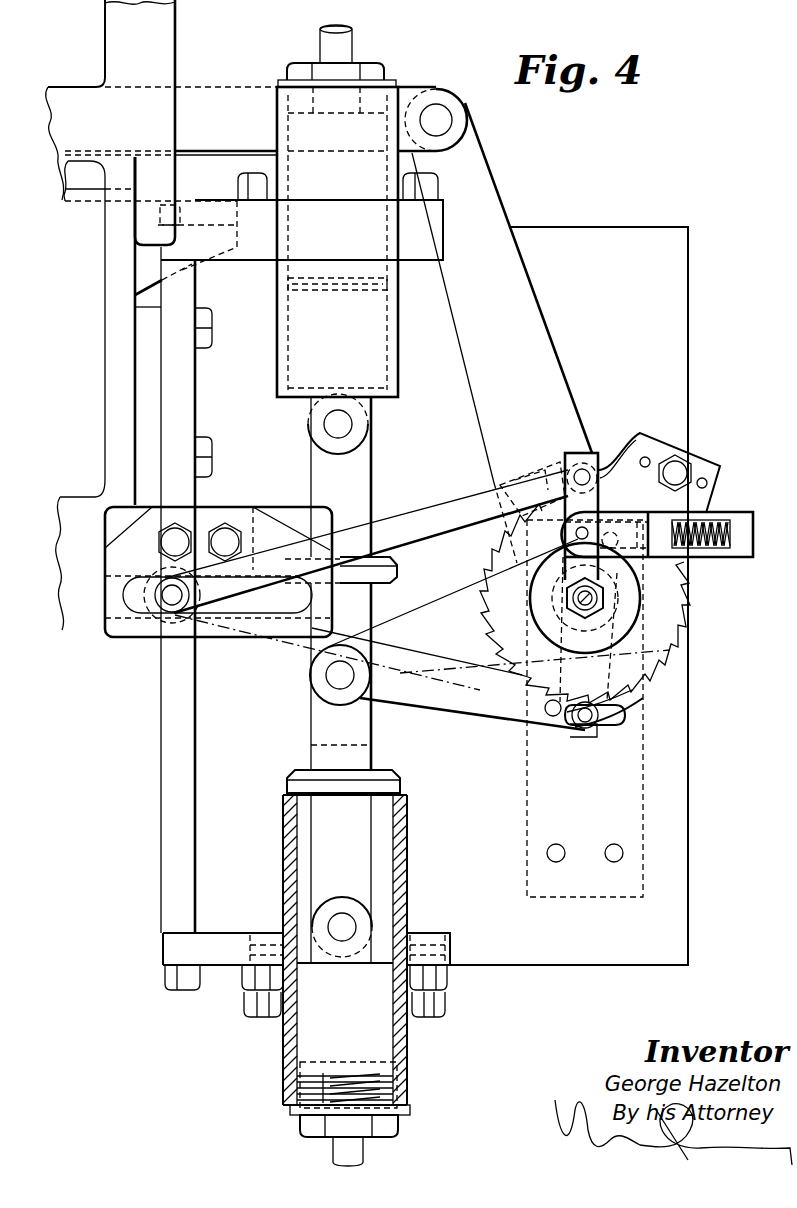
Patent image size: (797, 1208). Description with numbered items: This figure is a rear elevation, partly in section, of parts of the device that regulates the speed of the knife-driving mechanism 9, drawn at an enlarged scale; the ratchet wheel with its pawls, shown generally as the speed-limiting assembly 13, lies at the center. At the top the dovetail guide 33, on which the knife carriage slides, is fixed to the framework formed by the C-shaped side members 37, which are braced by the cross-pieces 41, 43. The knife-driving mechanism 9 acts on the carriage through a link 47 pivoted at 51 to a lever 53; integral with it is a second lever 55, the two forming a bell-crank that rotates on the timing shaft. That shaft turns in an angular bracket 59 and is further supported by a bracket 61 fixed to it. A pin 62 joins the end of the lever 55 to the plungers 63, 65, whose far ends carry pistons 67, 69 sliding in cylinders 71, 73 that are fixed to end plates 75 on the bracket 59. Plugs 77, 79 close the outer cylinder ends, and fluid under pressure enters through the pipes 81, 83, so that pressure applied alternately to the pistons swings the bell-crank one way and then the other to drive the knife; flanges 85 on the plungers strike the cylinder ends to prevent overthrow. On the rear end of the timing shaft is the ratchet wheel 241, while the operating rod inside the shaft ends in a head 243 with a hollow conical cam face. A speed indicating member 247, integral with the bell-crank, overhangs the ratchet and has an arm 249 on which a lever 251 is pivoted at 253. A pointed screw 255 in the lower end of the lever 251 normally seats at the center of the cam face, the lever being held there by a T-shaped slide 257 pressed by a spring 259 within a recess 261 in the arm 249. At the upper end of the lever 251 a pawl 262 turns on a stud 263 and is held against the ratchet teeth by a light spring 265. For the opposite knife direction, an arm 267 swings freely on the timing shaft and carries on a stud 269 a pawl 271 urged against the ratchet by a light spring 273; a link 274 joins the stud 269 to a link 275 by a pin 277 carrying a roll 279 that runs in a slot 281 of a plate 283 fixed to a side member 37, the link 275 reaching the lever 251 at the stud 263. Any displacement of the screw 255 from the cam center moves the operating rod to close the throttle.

The knife-driving mechanism 9 is at (562, 309).
The ratchet wheel 13 is at (681, 686).
The dovetail guide 33 is at (72, 175).
The C-shaped side member 37 is at (113, 430).
The cross-piece 41 is at (103, 607).
The cross-piece 43 is at (80, 92).
The link 47 is at (230, 97).
The pivot 51 is at (441, 114).
The lever 53 is at (555, 372).
The lever 55 is at (402, 687).
The angular bracket 59 is at (193, 815).
The bracket 61 is at (643, 882).
The pin 62 is at (330, 680).
The plunger 63 is at (364, 478).
The plunger 65 is at (318, 727).
The piston 67 is at (368, 293).
The piston 69 is at (377, 1070).
The cylinder 71 is at (286, 318).
The cylinder 73 is at (407, 903).
The end plate 75 is at (228, 958).
The plug 77 is at (373, 70).
The plug 79 is at (392, 1125).
The pipe 81 is at (348, 38).
The pipe 83 is at (356, 1152).
The flange 85 is at (397, 569).
The ratchet wheel 241 is at (679, 594).
The head 243 is at (553, 590).
The speed indicating member 247 is at (655, 441).
The arm 249 is at (587, 517).
The lever 251 is at (563, 582).
The pivot 253 is at (576, 534).
The screw 255 is at (600, 599).
The T-shaped slide 257 is at (607, 507).
The spring 259 is at (714, 522).
The recess 261 is at (657, 509).
The pawl 262 is at (537, 490).
The stud 263 is at (583, 470).
The light spring 265 is at (555, 473).
The arm 267 is at (638, 690).
The stud 269 is at (585, 722).
The pawl 271 is at (627, 703).
The light spring 273 is at (603, 716).
The link 274 is at (503, 694).
The link 275 is at (442, 508).
The pin 277 is at (170, 592).
The roll 279 is at (155, 604).
The slot 281 is at (253, 618).
The plate 283 is at (239, 507).